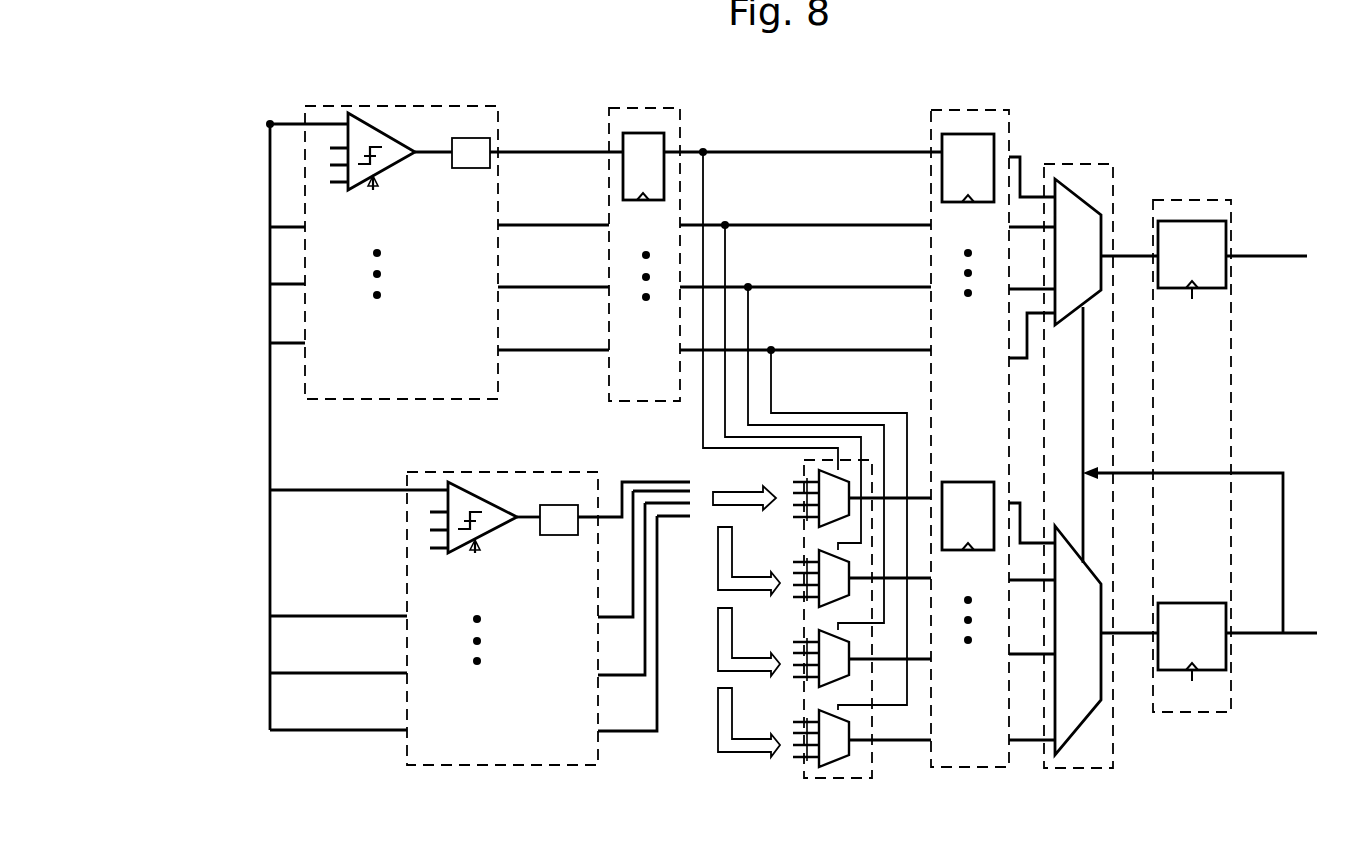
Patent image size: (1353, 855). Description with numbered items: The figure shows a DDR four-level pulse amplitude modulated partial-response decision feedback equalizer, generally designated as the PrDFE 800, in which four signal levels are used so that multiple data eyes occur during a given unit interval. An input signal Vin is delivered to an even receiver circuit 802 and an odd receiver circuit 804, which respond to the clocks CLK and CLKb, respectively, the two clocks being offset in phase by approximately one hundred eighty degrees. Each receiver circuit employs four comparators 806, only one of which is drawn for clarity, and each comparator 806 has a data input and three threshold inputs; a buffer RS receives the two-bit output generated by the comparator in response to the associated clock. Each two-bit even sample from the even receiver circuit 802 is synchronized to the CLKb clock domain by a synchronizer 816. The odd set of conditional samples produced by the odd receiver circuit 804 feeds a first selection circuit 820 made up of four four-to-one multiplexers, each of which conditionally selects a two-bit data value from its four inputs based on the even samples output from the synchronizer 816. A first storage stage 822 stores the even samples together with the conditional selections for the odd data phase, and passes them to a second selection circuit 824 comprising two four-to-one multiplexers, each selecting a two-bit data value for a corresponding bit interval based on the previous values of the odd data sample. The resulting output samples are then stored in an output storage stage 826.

The 4-PAM PrDFE 800 is at (1108, 91).
The even receiver circuit 802 is at (448, 106).
The odd receiver circuit 804 is at (557, 472).
The comparator 806 is at (410, 128).
The synchronizer 816 is at (604, 124).
The first selection circuit 820 is at (876, 768).
The first storage stage 822 is at (918, 127).
The second selection circuit 824 is at (1117, 748).
The output storage stage 826 is at (1240, 212).